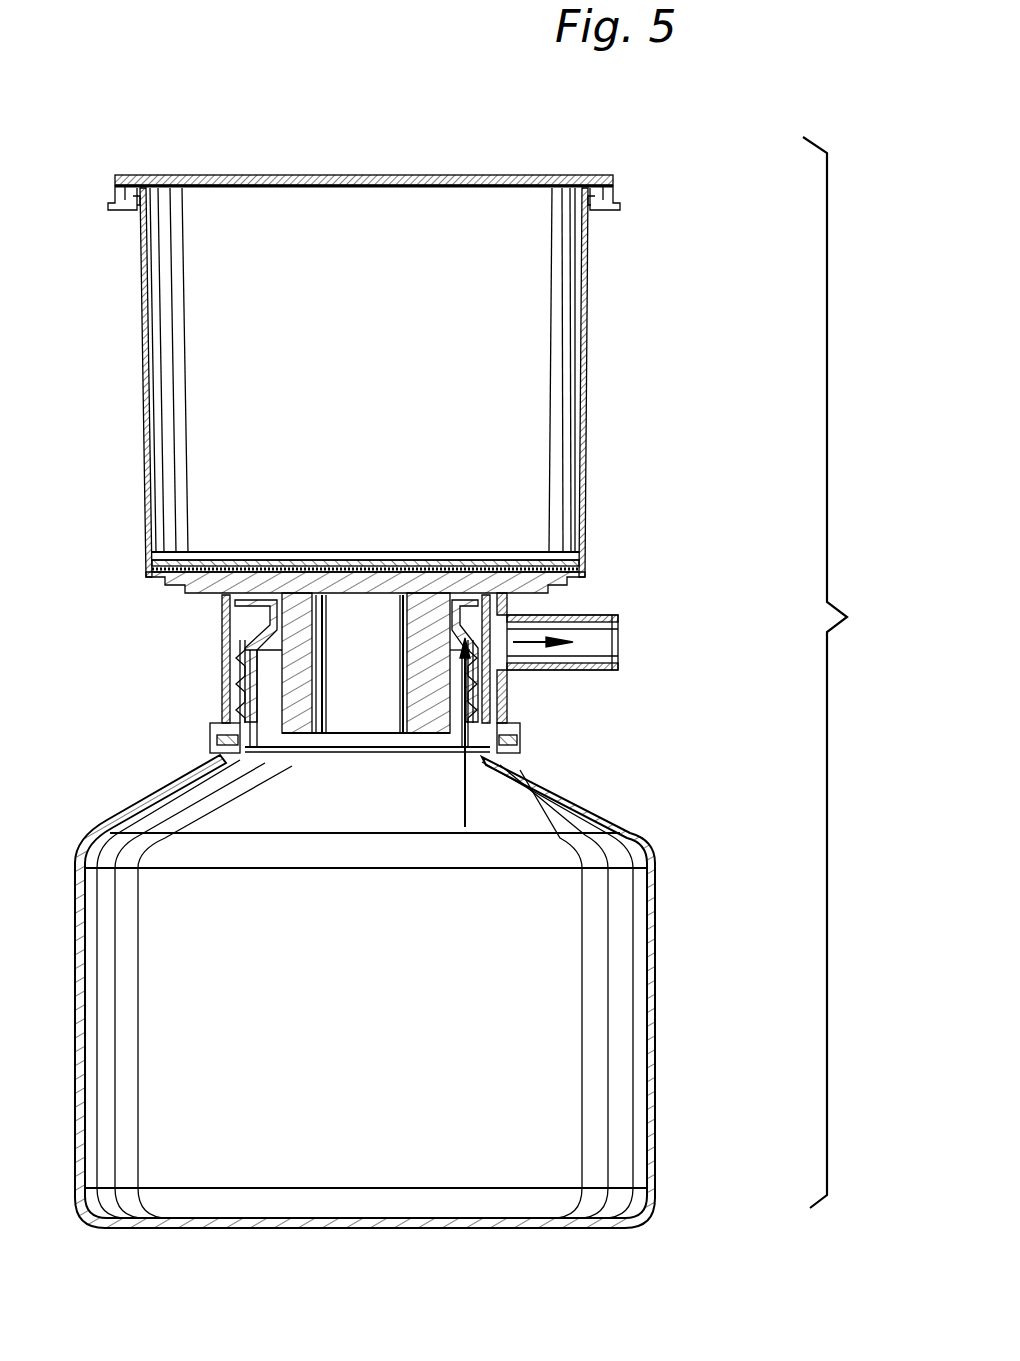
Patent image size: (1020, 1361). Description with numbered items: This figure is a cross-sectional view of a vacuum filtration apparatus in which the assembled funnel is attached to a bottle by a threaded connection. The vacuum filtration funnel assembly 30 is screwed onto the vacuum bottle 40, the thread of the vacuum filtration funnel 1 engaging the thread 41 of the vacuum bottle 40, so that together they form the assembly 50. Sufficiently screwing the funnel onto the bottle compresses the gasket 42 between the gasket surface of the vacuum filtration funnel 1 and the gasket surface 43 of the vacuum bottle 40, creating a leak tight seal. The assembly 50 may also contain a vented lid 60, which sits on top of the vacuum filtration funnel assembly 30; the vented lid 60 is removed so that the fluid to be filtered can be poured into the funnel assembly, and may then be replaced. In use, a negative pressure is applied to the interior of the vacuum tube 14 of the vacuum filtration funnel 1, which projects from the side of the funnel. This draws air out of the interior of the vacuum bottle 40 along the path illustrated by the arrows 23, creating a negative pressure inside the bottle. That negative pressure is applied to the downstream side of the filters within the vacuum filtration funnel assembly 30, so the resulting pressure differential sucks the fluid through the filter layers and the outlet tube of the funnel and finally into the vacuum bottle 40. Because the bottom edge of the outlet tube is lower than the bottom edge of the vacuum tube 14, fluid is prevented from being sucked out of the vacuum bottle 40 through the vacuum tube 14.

The vacuum filtration funnel 1 is at (582, 308).
The vacuum tube 14 is at (613, 617).
The arrows 23 is at (528, 645).
The vacuum filtration funnel assembly 30 is at (668, 387).
The vacuum bottle 40 is at (728, 1022).
The thread 41 is at (232, 697).
The gasket 42 is at (518, 740).
The gasket surface 43 is at (233, 745).
The assembly 50 is at (845, 672).
The vented lid 60 is at (612, 185).